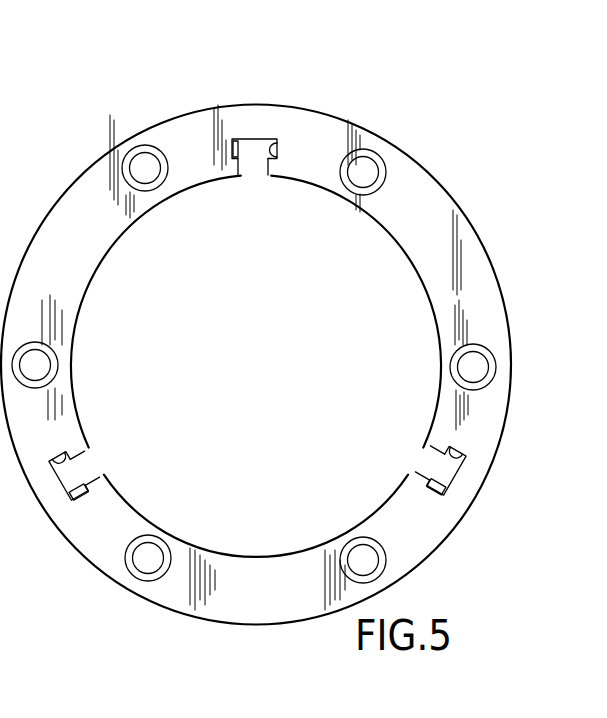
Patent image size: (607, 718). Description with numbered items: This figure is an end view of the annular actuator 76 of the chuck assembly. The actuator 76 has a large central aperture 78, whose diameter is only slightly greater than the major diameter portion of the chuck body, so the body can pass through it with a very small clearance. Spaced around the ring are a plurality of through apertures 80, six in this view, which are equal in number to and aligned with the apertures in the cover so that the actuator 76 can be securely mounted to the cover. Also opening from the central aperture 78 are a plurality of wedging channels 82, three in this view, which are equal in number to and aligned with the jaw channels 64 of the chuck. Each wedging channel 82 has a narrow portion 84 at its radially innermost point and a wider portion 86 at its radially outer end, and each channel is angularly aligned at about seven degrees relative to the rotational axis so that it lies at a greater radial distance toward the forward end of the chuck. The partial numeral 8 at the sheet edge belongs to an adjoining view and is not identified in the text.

The annular actuator 76 is at (343, 92).
The central aperture 78 is at (388, 230).
The through apertures 80 is at (143, 160).
The wedging channels 82 is at (232, 139).
The narrow portion 84 is at (237, 168).
The wider portion 86 is at (268, 140).
The jaw channels 64 is at (14, 167).
The adjacent component (partially shown) 8 is at (6, 72).